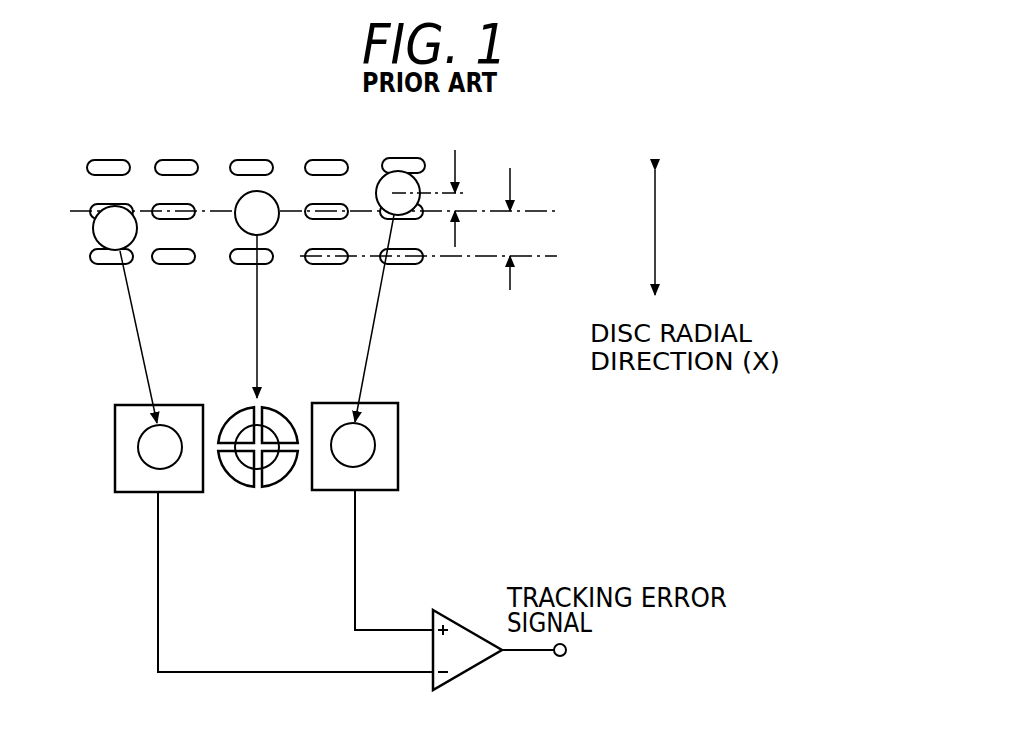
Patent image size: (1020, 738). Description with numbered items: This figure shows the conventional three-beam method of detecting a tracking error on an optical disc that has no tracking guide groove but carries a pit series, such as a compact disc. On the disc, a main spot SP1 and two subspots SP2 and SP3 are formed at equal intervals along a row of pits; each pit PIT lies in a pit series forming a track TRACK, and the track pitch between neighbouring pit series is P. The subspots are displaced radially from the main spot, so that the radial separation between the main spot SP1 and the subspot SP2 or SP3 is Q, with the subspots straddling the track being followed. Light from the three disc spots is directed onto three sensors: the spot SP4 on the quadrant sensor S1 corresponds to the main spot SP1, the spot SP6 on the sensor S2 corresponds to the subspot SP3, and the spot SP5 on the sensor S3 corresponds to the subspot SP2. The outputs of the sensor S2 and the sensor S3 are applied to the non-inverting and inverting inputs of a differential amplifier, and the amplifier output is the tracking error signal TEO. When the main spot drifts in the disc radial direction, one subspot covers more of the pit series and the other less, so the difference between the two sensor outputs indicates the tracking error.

The main spot SP1 is at (273, 197).
The subspot SP2 is at (385, 180).
The subspot SP3 is at (127, 207).
The spot on sensor SP4 is at (243, 470).
The spot on sensor SP5 is at (375, 443).
The spot on sensor SP6 is at (140, 445).
The sensor S1 is at (285, 480).
The sensor S2 is at (127, 493).
The sensor S3 is at (382, 492).
The pit PIT is at (413, 162).
The track TRACK is at (550, 211).
The track pitch P is at (512, 229).
The radial separation Q is at (439, 198).
The tracking error signal TEO is at (546, 666).